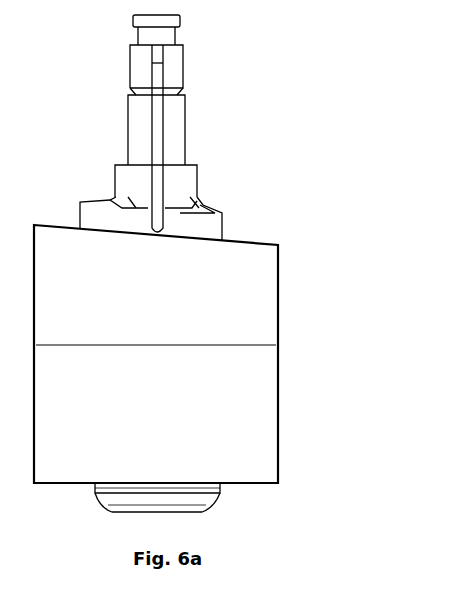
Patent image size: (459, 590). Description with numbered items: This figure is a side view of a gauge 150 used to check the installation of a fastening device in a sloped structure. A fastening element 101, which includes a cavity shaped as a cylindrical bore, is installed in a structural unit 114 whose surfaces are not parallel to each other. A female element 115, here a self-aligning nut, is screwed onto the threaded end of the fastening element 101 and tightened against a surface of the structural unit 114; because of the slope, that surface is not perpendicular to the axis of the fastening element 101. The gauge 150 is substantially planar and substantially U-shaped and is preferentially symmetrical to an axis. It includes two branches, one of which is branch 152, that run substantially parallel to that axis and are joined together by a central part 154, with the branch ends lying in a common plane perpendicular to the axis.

The structural unit 114 is at (296, 360).
The female element 115 is at (202, 192).
The fastening element 101 is at (185, 137).
The gauge 150 is at (191, 62).
The central part 154 is at (130, 58).
The branch 152 is at (150, 136).